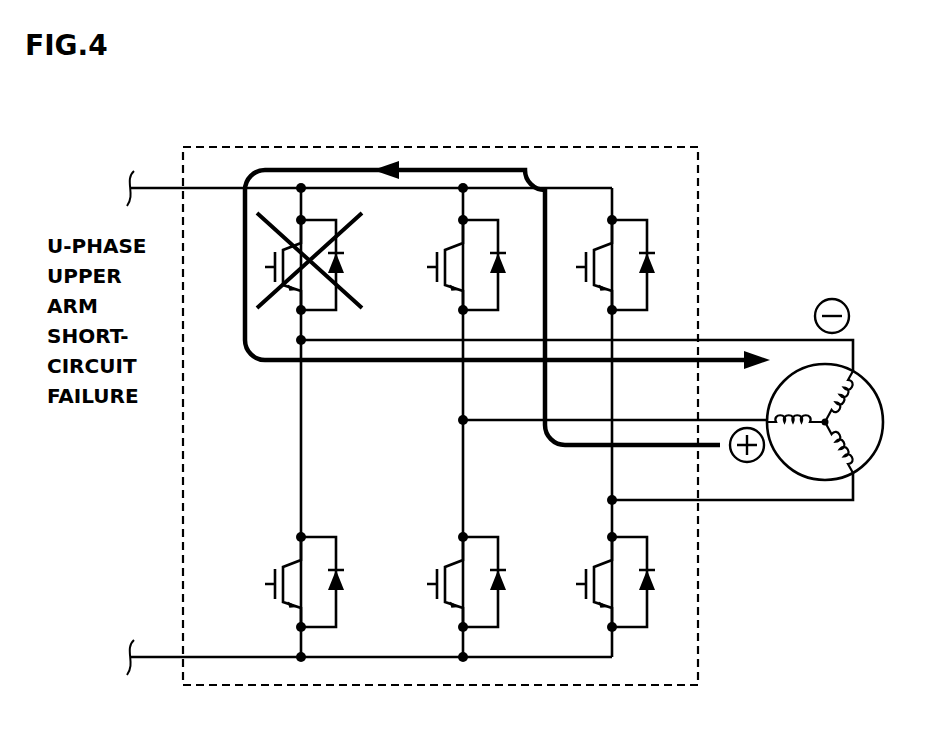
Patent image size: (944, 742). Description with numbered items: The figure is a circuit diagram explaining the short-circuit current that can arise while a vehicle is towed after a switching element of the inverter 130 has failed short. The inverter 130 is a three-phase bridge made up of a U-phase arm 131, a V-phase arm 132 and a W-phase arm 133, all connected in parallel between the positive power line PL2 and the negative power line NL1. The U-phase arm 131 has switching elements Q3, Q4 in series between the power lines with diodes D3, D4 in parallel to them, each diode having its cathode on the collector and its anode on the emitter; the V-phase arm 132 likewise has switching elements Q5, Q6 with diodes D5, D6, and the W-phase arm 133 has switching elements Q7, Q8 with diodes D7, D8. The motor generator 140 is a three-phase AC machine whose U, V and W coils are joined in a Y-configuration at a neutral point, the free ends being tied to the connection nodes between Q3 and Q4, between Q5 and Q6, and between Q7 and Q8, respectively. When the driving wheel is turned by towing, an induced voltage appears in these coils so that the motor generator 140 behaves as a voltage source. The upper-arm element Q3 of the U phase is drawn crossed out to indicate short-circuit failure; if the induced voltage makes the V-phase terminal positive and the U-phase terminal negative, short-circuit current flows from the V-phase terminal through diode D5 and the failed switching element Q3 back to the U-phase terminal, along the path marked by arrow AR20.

The inverter 130 is at (653, 147).
The U-phase arm 131 is at (285, 422).
The V-phase arm 132 is at (446, 422).
The W-phase arm 133 is at (595, 422).
The motor generator 140 is at (870, 387).
The arrow AR20 is at (448, 168).
The power line PL2 is at (369, 185).
The power line NL1 is at (369, 662).
The switching element Q3 is at (293, 243).
The switching element Q4 is at (293, 563).
The switching element Q5 is at (455, 243).
The switching element Q6 is at (455, 563).
The switching element Q7 is at (604, 243).
The switching element Q8 is at (604, 563).
The diode D3 is at (343, 266).
The diode D4 is at (343, 584).
The diode D5 is at (505, 266).
The diode D6 is at (505, 584).
The diode D7 is at (654, 266).
The diode D8 is at (654, 584).